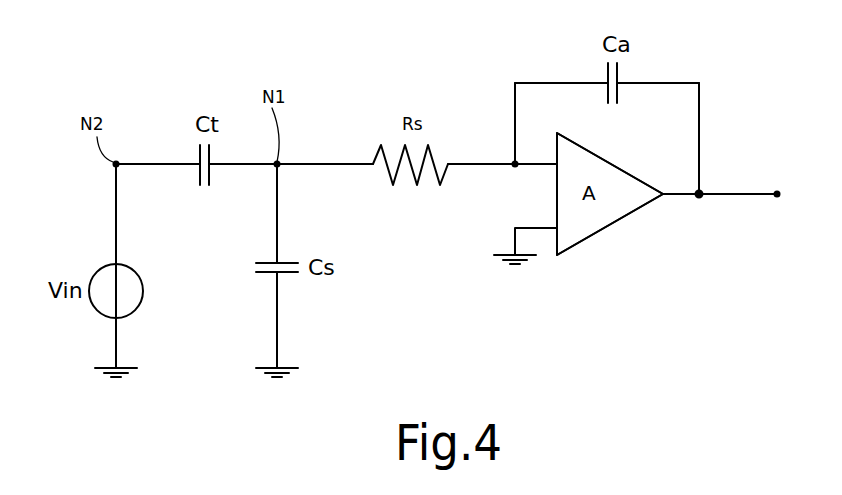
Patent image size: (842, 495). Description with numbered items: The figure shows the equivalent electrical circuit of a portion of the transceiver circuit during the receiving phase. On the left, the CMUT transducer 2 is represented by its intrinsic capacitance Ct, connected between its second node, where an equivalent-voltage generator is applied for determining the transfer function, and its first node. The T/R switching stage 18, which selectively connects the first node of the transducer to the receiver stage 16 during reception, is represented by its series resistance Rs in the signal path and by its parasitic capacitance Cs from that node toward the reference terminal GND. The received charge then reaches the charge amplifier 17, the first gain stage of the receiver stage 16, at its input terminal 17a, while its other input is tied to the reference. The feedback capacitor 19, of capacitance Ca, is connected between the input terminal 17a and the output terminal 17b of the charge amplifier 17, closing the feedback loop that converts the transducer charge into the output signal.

The CMUT transducer 2 is at (198, 148).
The receiver stage 16 is at (618, 245).
The charge amplifier 17 is at (635, 197).
The input terminal 17a is at (513, 162).
The output terminal 17b is at (777, 197).
The transmission/reception switching stage 18 is at (380, 137).
The feedback capacitor 19 is at (618, 68).